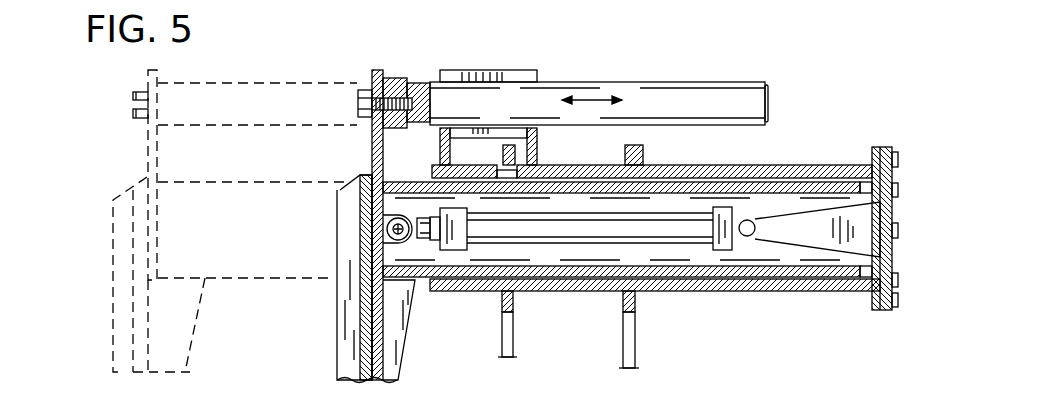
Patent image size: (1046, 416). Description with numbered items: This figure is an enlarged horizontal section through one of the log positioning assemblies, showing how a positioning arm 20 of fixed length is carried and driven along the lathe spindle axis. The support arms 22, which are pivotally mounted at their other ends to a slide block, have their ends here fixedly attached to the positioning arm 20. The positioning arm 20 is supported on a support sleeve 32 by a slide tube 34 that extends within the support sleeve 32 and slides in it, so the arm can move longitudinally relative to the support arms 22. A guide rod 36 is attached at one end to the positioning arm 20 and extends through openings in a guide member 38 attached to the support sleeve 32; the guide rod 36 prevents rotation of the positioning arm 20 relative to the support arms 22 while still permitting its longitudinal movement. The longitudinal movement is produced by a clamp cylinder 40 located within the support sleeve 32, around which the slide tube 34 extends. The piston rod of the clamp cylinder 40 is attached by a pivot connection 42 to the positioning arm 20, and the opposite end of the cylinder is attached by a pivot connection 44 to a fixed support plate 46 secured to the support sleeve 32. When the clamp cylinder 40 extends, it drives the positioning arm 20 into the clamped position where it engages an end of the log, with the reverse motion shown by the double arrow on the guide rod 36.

The positioning arm 20 is at (113, 316).
The support arms 22 is at (500, 340).
The support sleeve 32 is at (598, 164).
The slide tube 34 is at (397, 280).
The guide rod 36 is at (700, 82).
The guide member 38 is at (531, 70).
The clamp cylinder 40 is at (678, 210).
The pivot connection 42 is at (385, 228).
The pivot connection 44 is at (755, 228).
The fixed support plate 46 is at (894, 265).